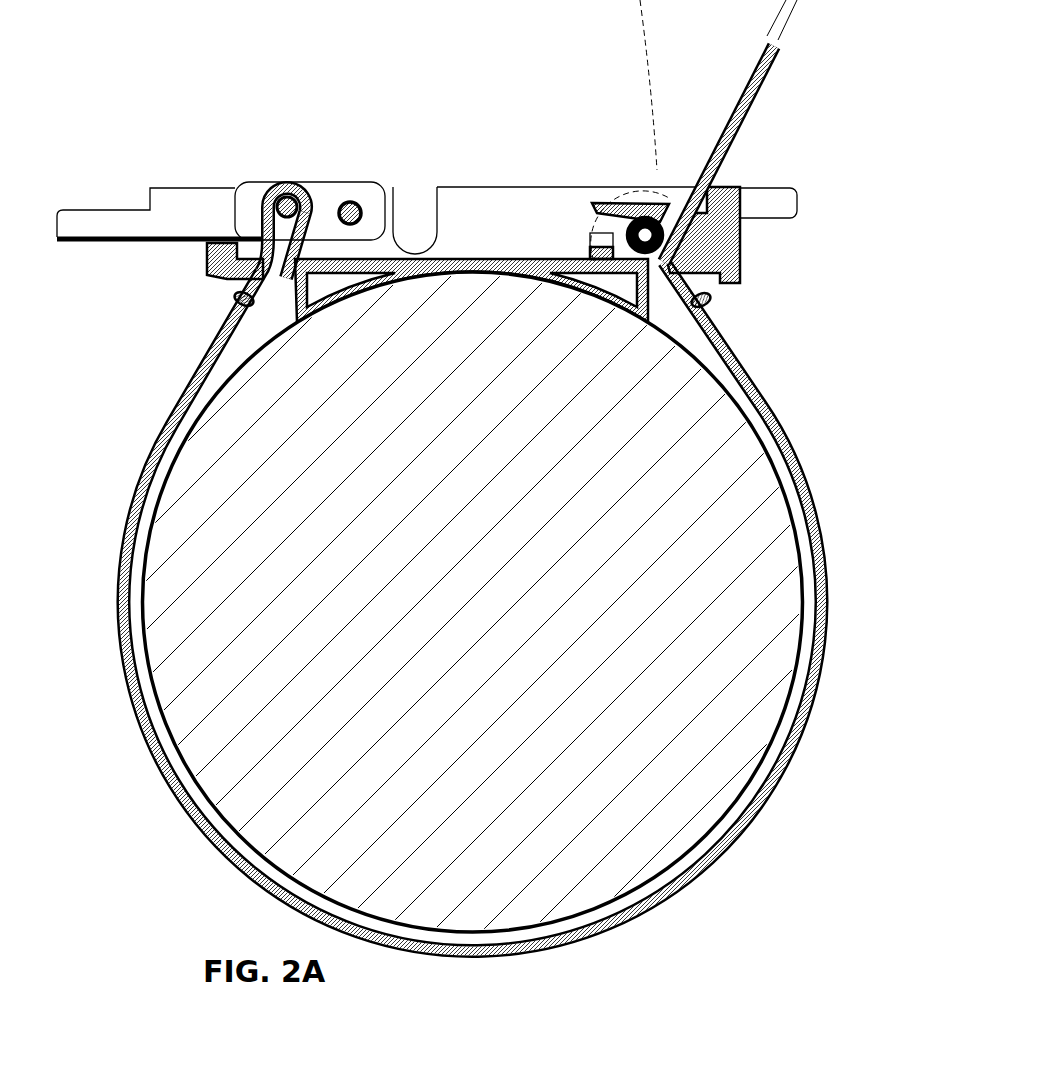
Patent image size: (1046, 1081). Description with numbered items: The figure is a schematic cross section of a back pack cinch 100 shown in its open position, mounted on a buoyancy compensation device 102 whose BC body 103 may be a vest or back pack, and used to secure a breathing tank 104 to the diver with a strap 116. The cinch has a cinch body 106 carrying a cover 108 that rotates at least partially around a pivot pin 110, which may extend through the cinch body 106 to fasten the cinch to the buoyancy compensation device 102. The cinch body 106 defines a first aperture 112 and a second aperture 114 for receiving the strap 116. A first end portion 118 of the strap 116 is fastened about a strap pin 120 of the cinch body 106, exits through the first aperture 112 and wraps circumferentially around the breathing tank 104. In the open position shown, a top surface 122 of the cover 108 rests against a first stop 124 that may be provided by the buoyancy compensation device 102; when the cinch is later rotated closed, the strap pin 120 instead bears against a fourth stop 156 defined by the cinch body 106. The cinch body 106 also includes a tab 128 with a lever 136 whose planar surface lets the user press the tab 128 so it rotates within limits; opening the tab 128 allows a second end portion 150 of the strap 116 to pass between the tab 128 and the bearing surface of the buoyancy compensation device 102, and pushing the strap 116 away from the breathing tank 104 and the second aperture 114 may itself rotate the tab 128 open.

The back pack cinch 100 is at (461, 475).
The buoyancy compensation device 102 is at (545, 258).
The BC body 103 is at (475, 252).
The breathing tank 104 is at (765, 618).
The cinch body 106 is at (515, 150).
The cover 108 is at (95, 210).
The pivot pin 110 is at (352, 200).
The first aperture 112 is at (283, 281).
The second aperture 114 is at (663, 279).
The strap 116 is at (770, 800).
The first end portion 118 is at (266, 256).
The strap pin 120 is at (293, 198).
The top surface 122 is at (112, 246).
The first stop 124 is at (218, 278).
The tab 128 is at (650, 192).
The lever 136 is at (610, 203).
The second end portion 150 is at (775, 83).
The fourth stop 156 is at (420, 240).